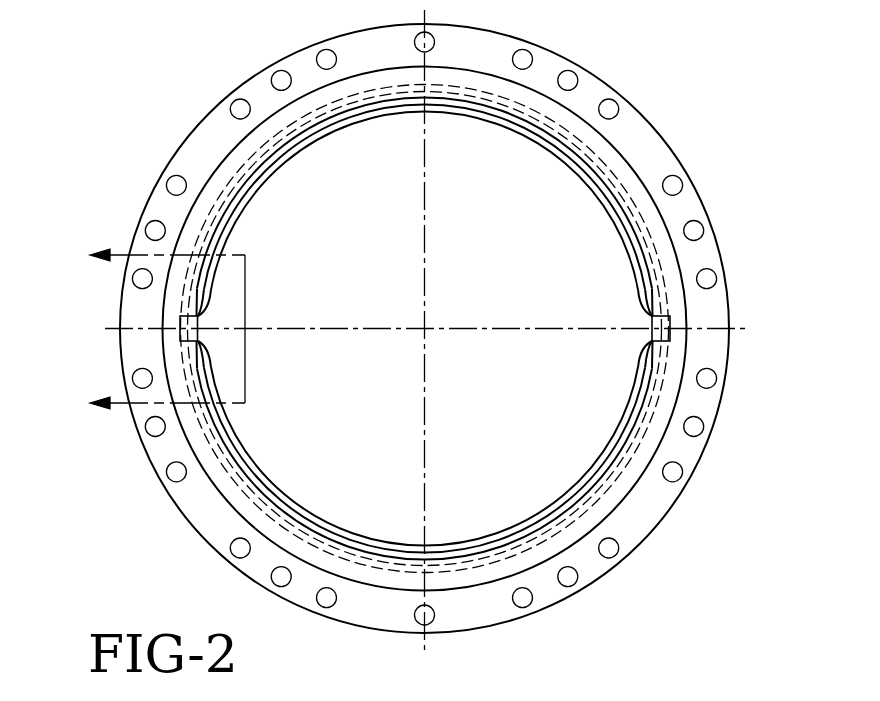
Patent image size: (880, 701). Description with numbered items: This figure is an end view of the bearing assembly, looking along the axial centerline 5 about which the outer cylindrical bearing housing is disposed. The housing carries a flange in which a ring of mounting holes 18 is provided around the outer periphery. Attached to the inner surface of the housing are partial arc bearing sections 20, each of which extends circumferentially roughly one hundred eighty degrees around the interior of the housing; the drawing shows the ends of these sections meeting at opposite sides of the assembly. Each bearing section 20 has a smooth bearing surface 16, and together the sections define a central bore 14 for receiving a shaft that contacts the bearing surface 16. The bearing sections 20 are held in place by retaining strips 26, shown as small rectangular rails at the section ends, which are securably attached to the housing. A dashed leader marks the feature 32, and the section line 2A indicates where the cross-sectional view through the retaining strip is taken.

The axial centerline 5 is at (428, 332).
The central bore 14 is at (494, 264).
The bearing surface 16 is at (503, 533).
The mounting holes 18 is at (697, 226).
The partial arc bearing sections 20 is at (275, 173).
The retaining strips 26 is at (197, 323).
The groove 32 is at (621, 186).
The section line 2A is at (144, 333).